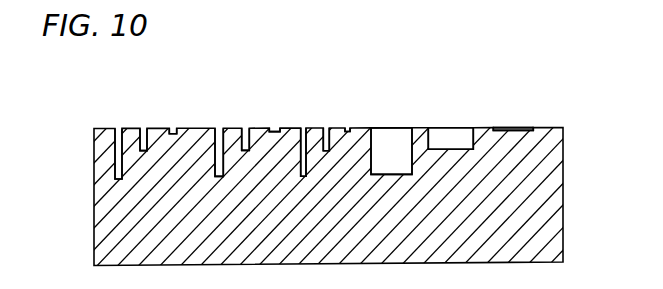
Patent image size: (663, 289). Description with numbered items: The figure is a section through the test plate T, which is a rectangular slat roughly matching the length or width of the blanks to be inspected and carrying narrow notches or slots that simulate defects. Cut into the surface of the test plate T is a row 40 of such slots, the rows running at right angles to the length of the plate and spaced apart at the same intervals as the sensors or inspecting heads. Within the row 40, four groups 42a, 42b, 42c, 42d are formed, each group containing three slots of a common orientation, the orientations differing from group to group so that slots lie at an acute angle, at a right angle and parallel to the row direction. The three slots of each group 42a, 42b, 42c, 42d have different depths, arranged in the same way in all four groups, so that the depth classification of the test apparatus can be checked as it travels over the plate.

The row 40 is at (93, 154).
The test plate T is at (108, 222).
The first group of slots 42a is at (146, 128).
The second group of slots 42b is at (257, 128).
The third group of slots 42c is at (340, 126).
The fourth group of slots 42d is at (461, 126).